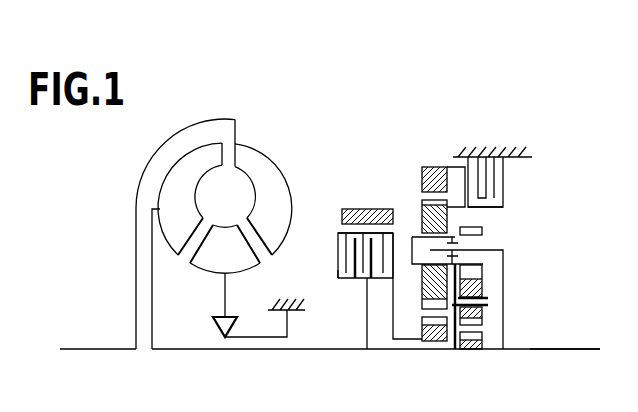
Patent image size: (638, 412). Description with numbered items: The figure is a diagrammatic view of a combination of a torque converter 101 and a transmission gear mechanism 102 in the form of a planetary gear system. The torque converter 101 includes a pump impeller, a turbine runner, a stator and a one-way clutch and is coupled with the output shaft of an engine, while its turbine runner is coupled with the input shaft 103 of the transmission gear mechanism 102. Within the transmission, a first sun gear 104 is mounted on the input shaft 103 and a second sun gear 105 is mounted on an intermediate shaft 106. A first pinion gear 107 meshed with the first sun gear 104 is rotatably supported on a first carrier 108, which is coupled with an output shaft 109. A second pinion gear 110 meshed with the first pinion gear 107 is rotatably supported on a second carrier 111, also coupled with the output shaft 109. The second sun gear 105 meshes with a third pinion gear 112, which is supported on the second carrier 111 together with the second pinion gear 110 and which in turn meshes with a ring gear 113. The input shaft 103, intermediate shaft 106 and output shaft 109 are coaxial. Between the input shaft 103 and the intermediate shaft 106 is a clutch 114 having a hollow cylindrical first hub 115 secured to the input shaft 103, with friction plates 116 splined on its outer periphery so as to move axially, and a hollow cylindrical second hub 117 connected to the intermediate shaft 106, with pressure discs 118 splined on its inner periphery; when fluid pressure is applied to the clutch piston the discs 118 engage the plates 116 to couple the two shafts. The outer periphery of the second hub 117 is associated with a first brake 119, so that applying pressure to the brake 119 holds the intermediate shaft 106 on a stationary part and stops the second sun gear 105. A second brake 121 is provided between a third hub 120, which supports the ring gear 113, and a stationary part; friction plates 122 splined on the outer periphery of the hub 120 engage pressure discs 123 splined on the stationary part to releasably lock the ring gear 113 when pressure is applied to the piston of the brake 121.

The torque converter 101 is at (221, 98).
The transmission gear mechanism 102 is at (478, 209).
The input shaft 103 is at (198, 351).
The first sun gear 104 is at (484, 335).
The second sun gear 105 is at (421, 331).
The intermediate shaft 106 is at (404, 340).
The first pinion gear 107 is at (483, 287).
The first carrier 108 is at (488, 308).
The output shaft 109 is at (567, 351).
The second pinion gear 110 is at (483, 232).
The second carrier 111 is at (503, 250).
The third pinion gear 112 is at (420, 203).
The ring gear 113 is at (420, 190).
The clutch 114 is at (329, 248).
The first hub 115 is at (358, 281).
The friction plates 116 is at (340, 273).
The second hub 117 is at (338, 231).
The pressure discs 118 is at (338, 238).
The first brake 119 is at (368, 200).
The third hub 120 is at (495, 210).
The second brake 121 is at (521, 140).
The friction plates 122 is at (507, 178).
The pressure discs 123 is at (485, 153).